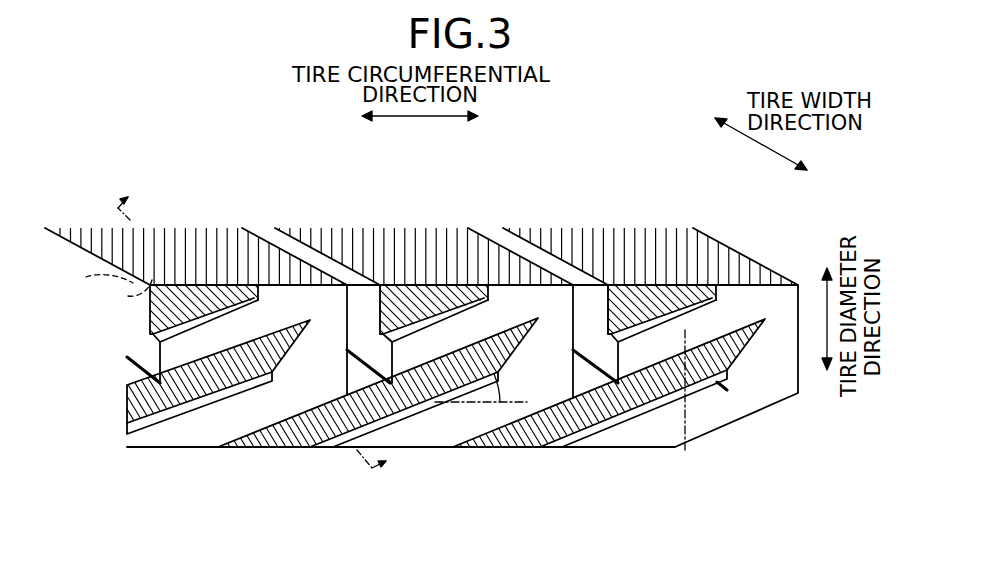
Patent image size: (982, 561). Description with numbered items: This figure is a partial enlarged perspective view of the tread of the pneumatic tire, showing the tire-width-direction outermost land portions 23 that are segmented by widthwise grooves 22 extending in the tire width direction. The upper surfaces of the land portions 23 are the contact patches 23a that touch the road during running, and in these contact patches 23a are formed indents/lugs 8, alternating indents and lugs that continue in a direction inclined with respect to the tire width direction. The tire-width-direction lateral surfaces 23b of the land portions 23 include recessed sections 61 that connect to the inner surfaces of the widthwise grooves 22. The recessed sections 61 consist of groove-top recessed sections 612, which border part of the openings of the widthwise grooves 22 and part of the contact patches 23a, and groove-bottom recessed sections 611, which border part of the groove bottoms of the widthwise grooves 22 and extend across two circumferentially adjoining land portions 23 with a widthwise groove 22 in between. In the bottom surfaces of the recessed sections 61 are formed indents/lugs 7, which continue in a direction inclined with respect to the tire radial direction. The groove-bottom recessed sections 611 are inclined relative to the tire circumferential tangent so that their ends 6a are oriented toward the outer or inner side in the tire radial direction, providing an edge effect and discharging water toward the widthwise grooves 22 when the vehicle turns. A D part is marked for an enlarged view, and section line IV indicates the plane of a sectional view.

The indents/lugs 8 is at (163, 237).
The land portions 23 is at (255, 240).
The widthwise grooves 22 is at (262, 237).
The contact patches 23a is at (107, 232).
The tire-width-direction lateral surfaces 23b is at (195, 435).
The ends 6a is at (513, 330).
The recessed sections 61 is at (443, 322).
The groove-top recessed sections 612 is at (707, 305).
The groove-bottom recessed sections 611 is at (130, 390).
The indents/lugs 7 is at (153, 312).
The D part D is at (109, 280).
The section line IV is at (262, 325).